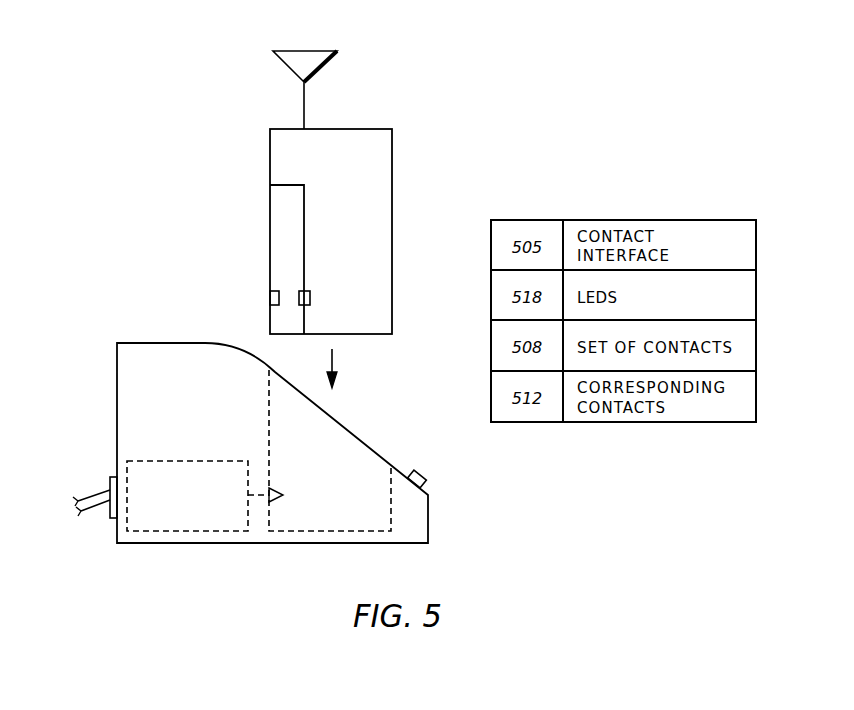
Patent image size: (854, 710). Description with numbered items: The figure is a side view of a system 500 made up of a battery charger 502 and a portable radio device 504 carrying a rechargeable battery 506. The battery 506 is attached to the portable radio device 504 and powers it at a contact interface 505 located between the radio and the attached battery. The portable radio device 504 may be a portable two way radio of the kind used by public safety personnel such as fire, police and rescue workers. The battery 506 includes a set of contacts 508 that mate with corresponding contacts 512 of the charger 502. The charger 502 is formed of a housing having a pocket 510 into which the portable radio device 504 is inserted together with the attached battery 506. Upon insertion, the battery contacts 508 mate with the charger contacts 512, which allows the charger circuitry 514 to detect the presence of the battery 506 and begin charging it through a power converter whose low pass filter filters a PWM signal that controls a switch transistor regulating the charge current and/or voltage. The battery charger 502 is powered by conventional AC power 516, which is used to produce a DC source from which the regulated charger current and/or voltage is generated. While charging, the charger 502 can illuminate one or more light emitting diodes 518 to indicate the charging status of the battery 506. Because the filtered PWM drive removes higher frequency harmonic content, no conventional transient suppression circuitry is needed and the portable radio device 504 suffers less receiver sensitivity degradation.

The system 500 is at (515, 502).
The battery charger 502 is at (117, 373).
The portable radio device 504 is at (392, 232).
The contact interface 505 is at (310, 298).
The battery 506 is at (270, 245).
The set of contacts 508 is at (270, 297).
The pocket 510 is at (337, 458).
The corresponding contacts 512 is at (280, 491).
The charger circuitry 514 is at (188, 461).
The AC power 516 is at (104, 489).
The light emitting diodes 518 is at (421, 471).